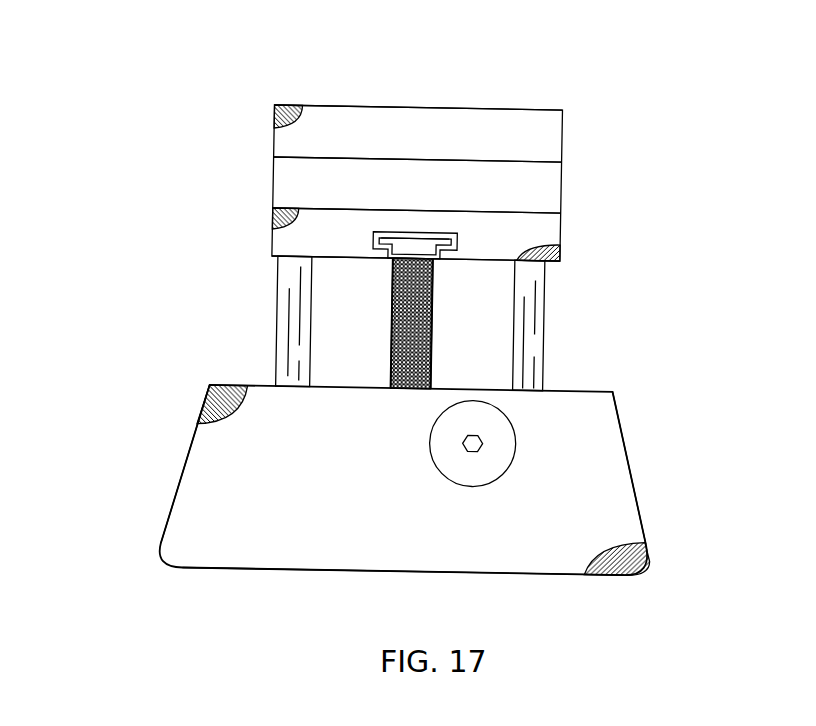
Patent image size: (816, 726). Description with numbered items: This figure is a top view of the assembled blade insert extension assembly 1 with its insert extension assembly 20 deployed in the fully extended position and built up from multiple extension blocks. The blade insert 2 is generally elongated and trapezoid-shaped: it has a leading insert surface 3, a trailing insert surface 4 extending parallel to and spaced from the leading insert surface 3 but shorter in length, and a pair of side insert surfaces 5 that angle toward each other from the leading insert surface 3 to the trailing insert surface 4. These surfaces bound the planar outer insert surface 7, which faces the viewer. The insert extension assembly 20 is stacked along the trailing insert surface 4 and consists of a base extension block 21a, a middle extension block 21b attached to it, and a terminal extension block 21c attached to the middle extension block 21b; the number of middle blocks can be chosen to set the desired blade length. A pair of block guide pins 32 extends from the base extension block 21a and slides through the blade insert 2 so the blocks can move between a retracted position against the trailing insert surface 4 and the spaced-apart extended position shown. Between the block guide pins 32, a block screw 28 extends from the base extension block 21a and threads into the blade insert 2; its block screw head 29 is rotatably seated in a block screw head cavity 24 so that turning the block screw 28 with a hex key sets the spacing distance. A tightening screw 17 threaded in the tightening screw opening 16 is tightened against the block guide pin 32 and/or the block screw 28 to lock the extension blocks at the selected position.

The blade insert extension assembly 1 is at (186, 88).
The blade insert 2 is at (176, 467).
The leading insert surface 3 is at (232, 570).
The trailing insert surface 4 is at (245, 386).
The side insert surfaces 5 is at (194, 427).
The outer insert surface 7 is at (294, 532).
The tightening screw opening 16 is at (456, 478).
The tightening screw 17 is at (447, 440).
The insert extension assembly 20 is at (568, 142).
The base extension block 21a is at (275, 231).
The middle extension block 21b is at (280, 191).
The terminal extension block 21c is at (274, 140).
The block screw head cavity 24 is at (429, 231).
The block screw 28 is at (393, 296).
The block screw head 29 is at (393, 231).
The block guide pin 32 is at (278, 278).